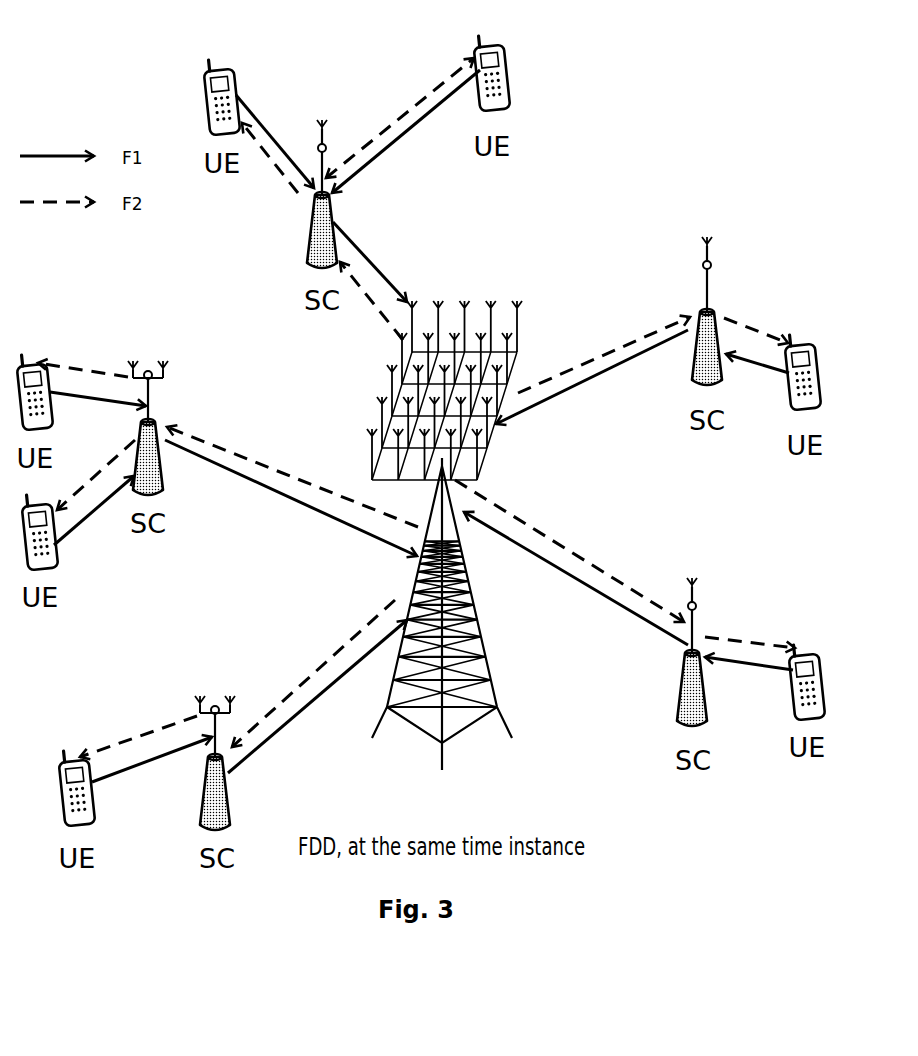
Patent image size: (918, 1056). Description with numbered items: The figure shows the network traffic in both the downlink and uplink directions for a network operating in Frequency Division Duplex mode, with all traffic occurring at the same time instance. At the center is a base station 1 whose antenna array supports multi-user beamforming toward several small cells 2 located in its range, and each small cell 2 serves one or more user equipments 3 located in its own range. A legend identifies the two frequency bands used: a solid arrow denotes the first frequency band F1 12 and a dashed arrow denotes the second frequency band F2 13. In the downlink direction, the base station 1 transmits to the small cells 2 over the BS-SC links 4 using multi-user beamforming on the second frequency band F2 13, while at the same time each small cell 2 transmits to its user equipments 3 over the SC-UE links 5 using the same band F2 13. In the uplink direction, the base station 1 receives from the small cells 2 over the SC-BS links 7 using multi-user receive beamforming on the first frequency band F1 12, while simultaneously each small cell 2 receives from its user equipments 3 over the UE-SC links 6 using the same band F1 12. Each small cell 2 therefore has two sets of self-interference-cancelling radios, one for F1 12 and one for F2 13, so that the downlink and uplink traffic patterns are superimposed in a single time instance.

The base station (BS) 1 is at (490, 640).
The small cell (SC) 2 is at (308, 230).
The user equipment (UE) 3 is at (508, 83).
The BS-SC link 4 is at (400, 325).
The SC-UE link 5 is at (420, 96).
The UE-SC link 6 is at (397, 150).
The SC-BS link 7 is at (365, 256).
The first frequency band F1 12 is at (68, 156).
The second frequency band F2 13 is at (68, 203).